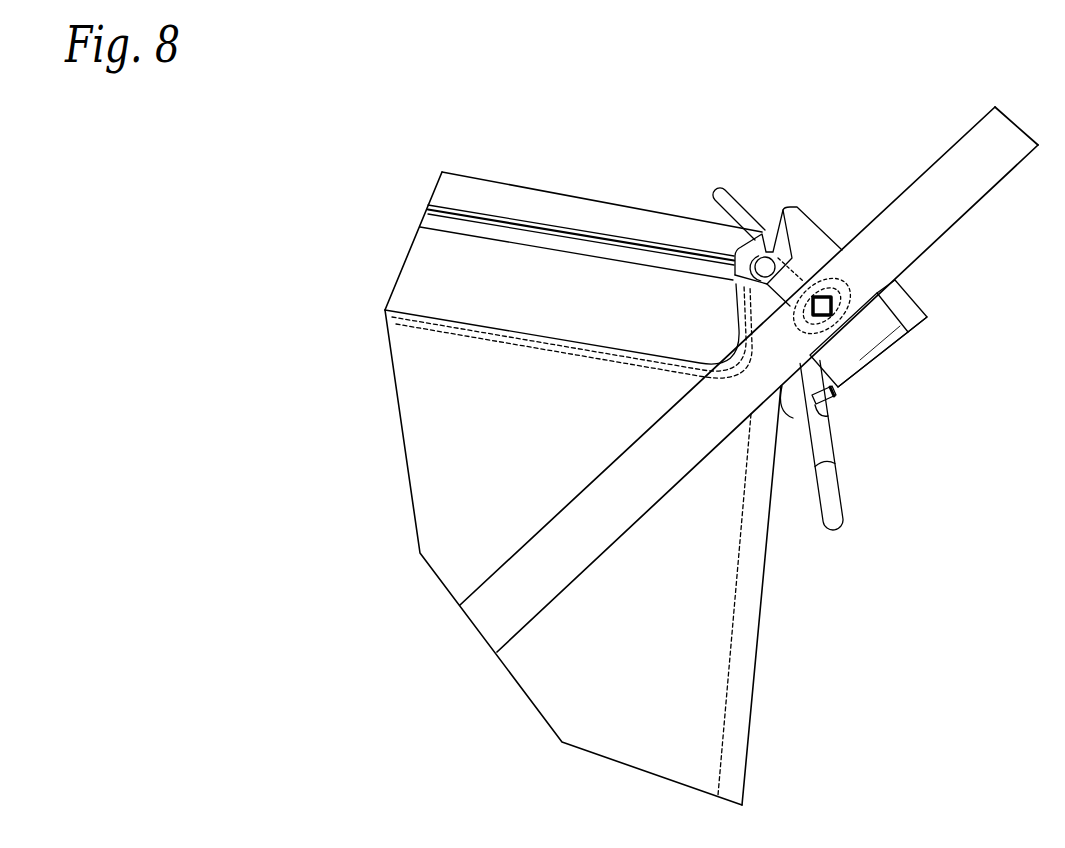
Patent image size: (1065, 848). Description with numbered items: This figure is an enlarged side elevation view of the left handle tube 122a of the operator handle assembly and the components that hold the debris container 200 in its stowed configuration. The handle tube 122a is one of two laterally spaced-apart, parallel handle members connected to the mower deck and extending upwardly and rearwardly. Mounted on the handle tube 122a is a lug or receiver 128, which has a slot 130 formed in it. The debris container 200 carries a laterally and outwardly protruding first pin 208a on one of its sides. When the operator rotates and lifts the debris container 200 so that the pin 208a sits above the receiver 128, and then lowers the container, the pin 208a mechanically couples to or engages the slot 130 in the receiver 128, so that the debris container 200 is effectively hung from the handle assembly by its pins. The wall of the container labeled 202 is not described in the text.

The debris container 200 is at (602, 760).
The bin side wall 202 is at (676, 627).
The first handle tube 122a is at (948, 233).
The third lug or receiver 128 is at (877, 353).
The slot 130 is at (774, 250).
The first pin 208a is at (770, 262).